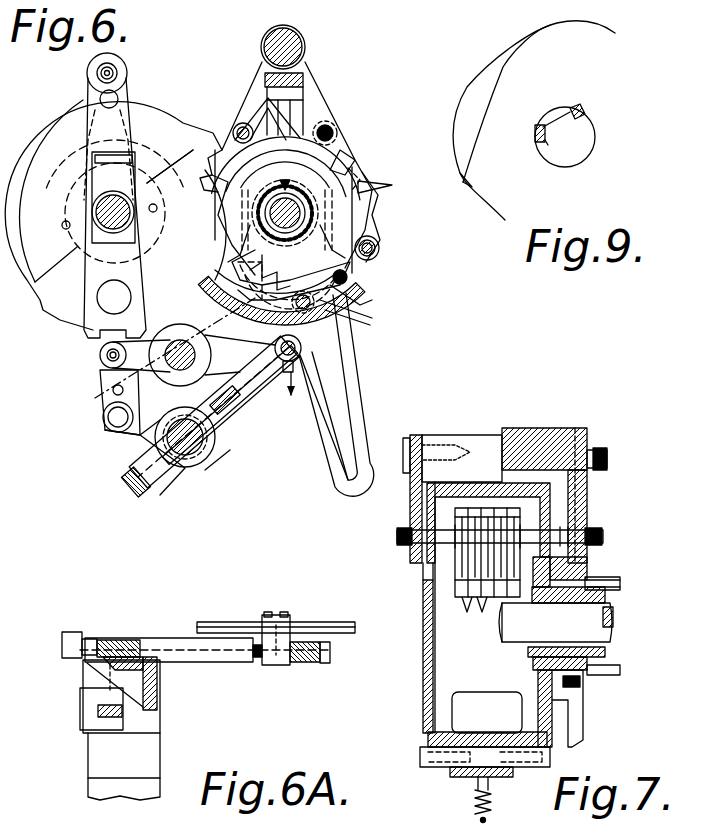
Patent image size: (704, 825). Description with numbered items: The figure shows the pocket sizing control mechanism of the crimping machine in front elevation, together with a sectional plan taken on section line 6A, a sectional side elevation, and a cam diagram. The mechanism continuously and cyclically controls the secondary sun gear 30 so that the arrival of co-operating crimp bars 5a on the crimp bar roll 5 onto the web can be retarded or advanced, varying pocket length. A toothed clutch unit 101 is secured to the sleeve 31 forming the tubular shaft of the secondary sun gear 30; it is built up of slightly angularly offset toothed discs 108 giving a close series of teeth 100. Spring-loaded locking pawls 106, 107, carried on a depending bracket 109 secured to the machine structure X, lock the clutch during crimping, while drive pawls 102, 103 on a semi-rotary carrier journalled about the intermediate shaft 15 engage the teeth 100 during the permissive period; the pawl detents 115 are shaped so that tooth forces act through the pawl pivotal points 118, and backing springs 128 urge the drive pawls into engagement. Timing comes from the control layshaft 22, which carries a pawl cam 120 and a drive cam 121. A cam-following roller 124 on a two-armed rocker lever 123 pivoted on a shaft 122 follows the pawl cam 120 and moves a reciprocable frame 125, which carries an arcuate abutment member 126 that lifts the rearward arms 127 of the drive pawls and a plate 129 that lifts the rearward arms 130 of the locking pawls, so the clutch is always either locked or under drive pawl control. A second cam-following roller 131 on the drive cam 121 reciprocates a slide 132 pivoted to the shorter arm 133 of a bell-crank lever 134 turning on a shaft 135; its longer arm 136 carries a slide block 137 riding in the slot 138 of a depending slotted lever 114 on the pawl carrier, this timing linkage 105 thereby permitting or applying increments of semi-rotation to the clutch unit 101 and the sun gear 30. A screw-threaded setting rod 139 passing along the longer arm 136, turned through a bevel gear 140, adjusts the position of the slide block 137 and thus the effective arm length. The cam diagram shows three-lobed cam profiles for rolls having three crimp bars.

In FIG. 6, the intermediate shaft 15 is at (270, 213).
In FIG. 7, the intermediate shaft 15 is at (560, 642).
In FIG. 6, the control layshaft 22 is at (92, 200).
In FIG. 7, the secondary sun gear 30 is at (597, 675).
In FIG. 6, the secondary sun gear shaft sleeve 31 is at (147, 183).
In FIG. 7, the secondary sun gear shaft sleeve 31 is at (535, 657).
In FIG. 6, the clutch teeth 100 is at (282, 272).
In FIG. 6, the toothed clutch unit 101 is at (343, 155).
In FIG. 6, the drive pawl 102 is at (262, 302).
In FIG. 6, the drive pawl 103 is at (374, 208).
In FIG. 6, the timing linkage 105 is at (224, 455).
In FIG. 6, the locking pawl 106 is at (214, 160).
In FIG. 6, the locking pawl 107 is at (352, 175).
In FIG. 7, the locking pawl 107 is at (468, 621).
In FIG. 6, the toothed discs 108 is at (350, 288).
In FIG. 6, the depending bracket 109 is at (307, 62).
In FIG. 7, the depending bracket 109 is at (415, 517).
In FIG. 6, the depending slotted lever 114 is at (348, 397).
In FIG. 6A, the depending slotted lever 114 is at (212, 622).
In FIG. 6, the engagement detents 115 is at (392, 185).
In FIG. 6, the pivotal points 118 is at (243, 123).
In FIG. 7, the pivotal points 118 is at (403, 542).
In FIG. 6, the pawl cam 120 is at (75, 320).
In FIG. 9, the pawl cam 120 is at (453, 107).
In FIG. 6, the drive cam 121 is at (155, 123).
In FIG. 9, the drive cam 121 is at (503, 68).
In FIG. 6, the shaft 122 is at (122, 423).
In FIG. 6, the two-armed rocker lever 123 is at (247, 372).
In FIG. 7, the two-armed rocker lever 123 is at (473, 777).
In FIG. 6, the cam-following roller 124 is at (99, 352).
In FIG. 6, the reciprocable frame 125 is at (345, 272).
In FIG. 7, the reciprocable frame 125 is at (427, 680).
In FIG. 6, the arcuate abutment member 126 is at (303, 318).
In FIG. 7, the arcuate abutment member 126 is at (465, 708).
In FIG. 6, the rearward arms 127 is at (365, 308).
In FIG. 6, the backing springs 128 is at (378, 246).
In FIG. 6, the plate 129 is at (335, 150).
In FIG. 7, the plate 129 is at (527, 495).
In FIG. 6, the rearward arms 130 is at (297, 125).
In FIG. 7, the rearward arms 130 is at (475, 510).
In FIG. 6, the cam-following roller 131 is at (87, 73).
In FIG. 6, the reciprocating slide 132 is at (100, 378).
In FIG. 6A, the reciprocating slide 132 is at (82, 710).
In FIG. 6, the shorter arm 133 is at (140, 437).
In FIG. 6A, the shorter arm 133 is at (128, 722).
In FIG. 6, the bell-crank lever 134 is at (197, 472).
In FIG. 6A, the bell-crank lever 134 is at (168, 667).
In FIG. 6, the shaft 135 is at (187, 455).
In FIG. 6A, the shaft 135 is at (160, 683).
In FIG. 6, the longer arm 136 is at (230, 417).
In FIG. 6A, the longer arm 136 is at (188, 650).
In FIG. 6A, the slide block 137 is at (285, 618).
In FIG. 6, the slot 138 is at (337, 417).
In FIG. 6A, the slot 138 is at (262, 627).
In FIG. 6, the screw-threaded setting rod 139 is at (235, 390).
In FIG. 6A, the screw-threaded setting rod 139 is at (138, 655).
In FIG. 6, the bevel gear 140 is at (132, 478).
In FIG. 6A, the bevel gear 140 is at (63, 652).
In FIG. 9, the crimp bar roll 5 is at (613, 100).
In FIG. 9, the crimp bar 5a is at (535, 137).
In FIG. 6, the section line 6A is at (247, 300).
In FIG. 7, the machine structure X is at (580, 503).